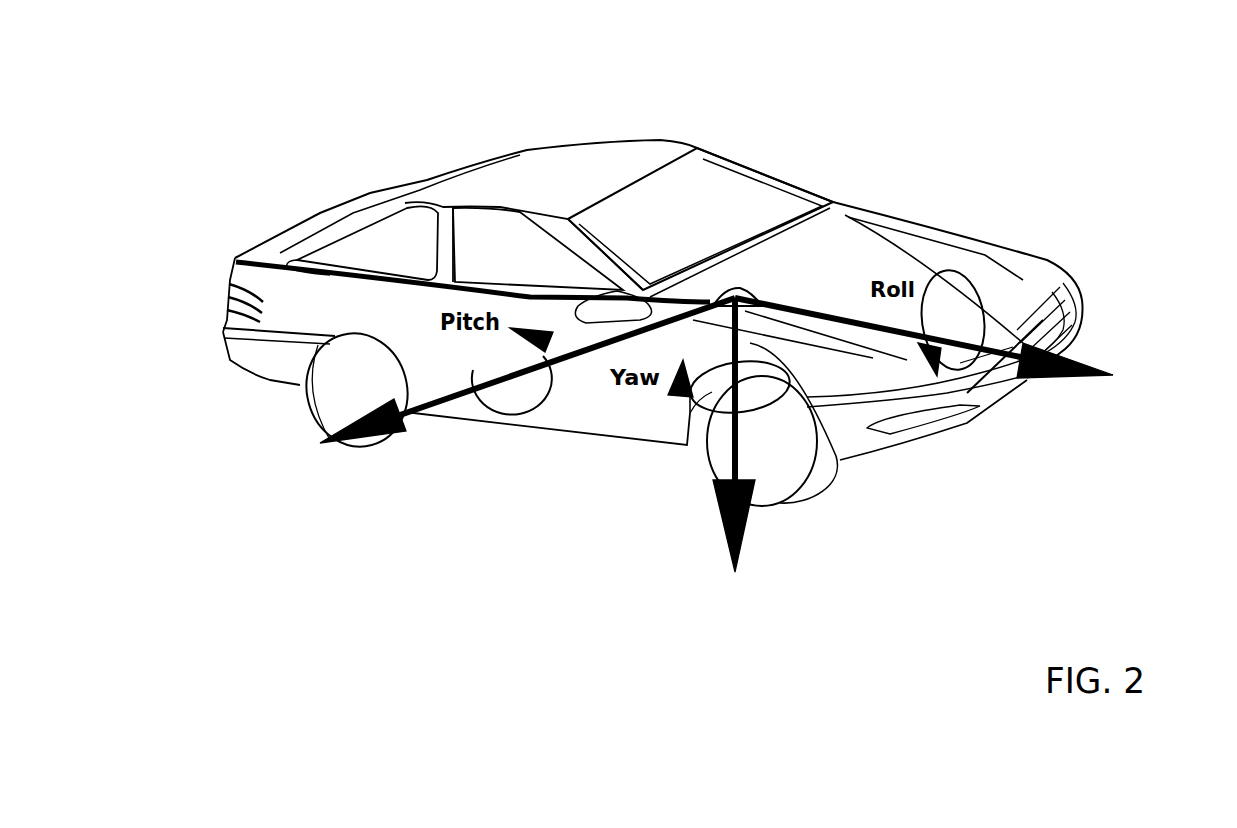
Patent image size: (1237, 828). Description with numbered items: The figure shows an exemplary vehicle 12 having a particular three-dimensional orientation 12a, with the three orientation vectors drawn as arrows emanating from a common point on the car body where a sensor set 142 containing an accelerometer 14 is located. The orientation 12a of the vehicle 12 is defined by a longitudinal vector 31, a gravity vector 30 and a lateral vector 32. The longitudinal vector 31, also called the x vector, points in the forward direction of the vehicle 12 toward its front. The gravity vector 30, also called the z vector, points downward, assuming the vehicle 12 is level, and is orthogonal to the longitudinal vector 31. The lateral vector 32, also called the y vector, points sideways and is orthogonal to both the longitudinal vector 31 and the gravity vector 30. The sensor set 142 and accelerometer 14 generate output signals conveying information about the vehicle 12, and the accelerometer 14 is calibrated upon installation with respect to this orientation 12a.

The vehicle 12 is at (523, 148).
The sensor set 142 is at (911, 205).
The accelerometer 14 is at (911, 205).
The three-dimensional orientation 12a is at (750, 293).
The longitudinal vector 31 is at (971, 372).
The lateral vector 32 is at (475, 462).
The gravity vector 30 is at (747, 517).